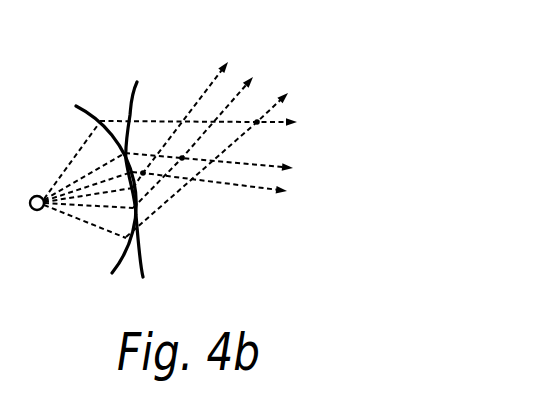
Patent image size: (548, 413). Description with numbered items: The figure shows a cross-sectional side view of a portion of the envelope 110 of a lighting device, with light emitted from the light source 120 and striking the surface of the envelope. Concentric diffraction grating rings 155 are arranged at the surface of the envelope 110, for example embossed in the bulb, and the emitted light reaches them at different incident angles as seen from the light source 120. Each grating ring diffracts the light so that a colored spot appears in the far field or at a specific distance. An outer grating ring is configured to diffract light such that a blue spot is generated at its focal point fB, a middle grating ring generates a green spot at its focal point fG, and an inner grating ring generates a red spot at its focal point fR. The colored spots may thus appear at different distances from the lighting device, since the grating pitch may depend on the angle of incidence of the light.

The envelope 110 is at (98, 113).
The grating rings 155 is at (137, 82).
The light source 120 is at (37, 210).
The focal point of inner grating ring fR is at (143, 173).
The focal point of middle grating ring fG is at (182, 158).
The focal point of outer grating ring fB is at (257, 122).